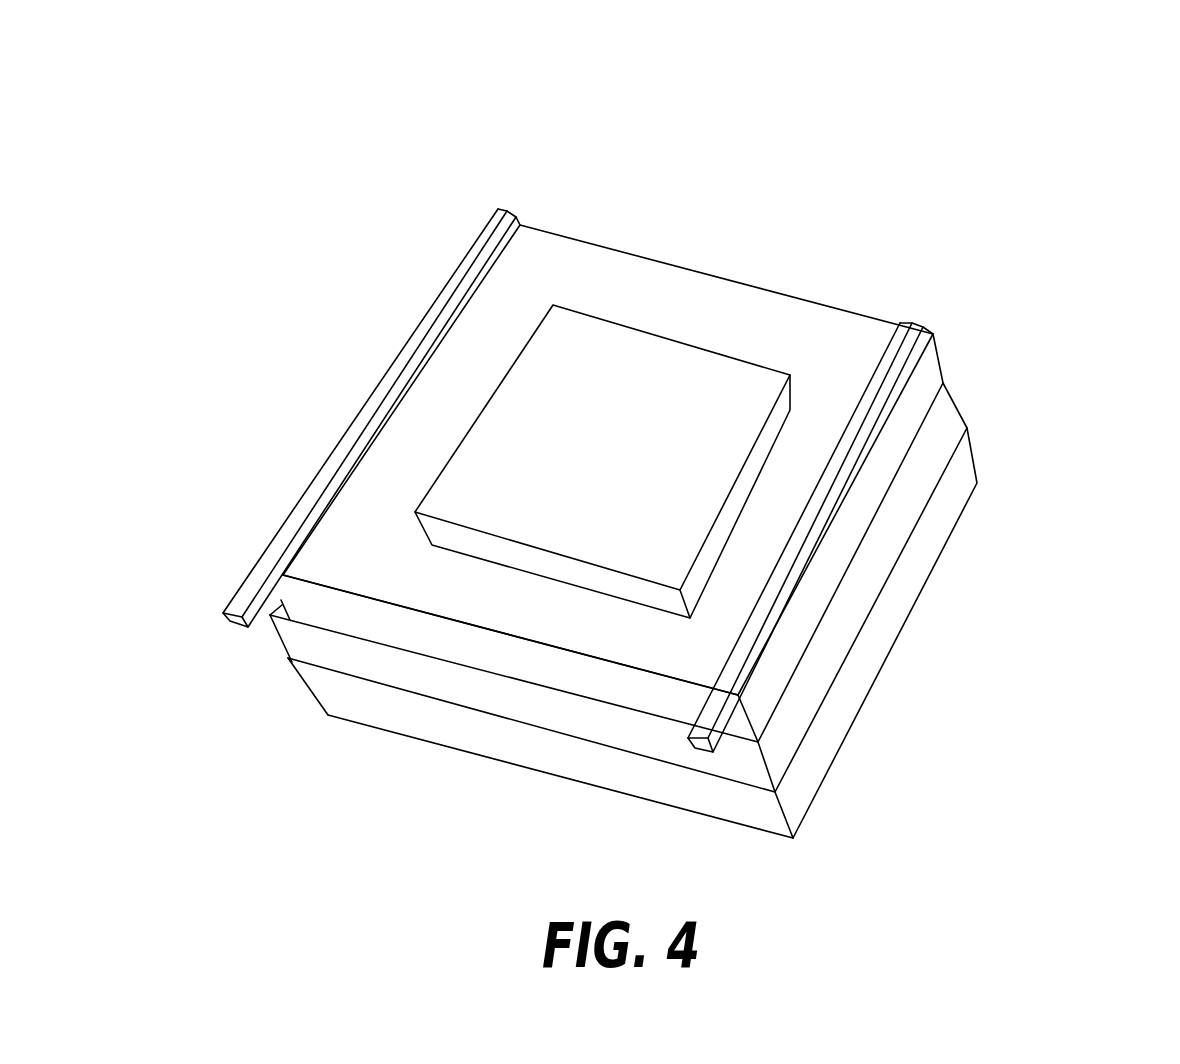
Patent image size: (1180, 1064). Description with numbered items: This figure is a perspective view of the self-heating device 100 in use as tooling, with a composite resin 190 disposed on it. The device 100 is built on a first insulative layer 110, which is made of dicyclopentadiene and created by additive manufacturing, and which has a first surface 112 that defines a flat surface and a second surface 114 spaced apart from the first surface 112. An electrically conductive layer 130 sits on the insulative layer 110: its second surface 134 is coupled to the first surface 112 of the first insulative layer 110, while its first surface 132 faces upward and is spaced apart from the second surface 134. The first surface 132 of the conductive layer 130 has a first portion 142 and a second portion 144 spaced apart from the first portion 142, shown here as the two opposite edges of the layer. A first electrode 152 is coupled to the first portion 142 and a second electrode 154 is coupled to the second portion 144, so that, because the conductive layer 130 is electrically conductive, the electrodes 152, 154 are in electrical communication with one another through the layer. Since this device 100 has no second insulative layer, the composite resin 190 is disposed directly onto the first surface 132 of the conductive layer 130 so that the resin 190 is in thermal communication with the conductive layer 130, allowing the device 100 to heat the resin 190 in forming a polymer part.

The self-heating device 100 is at (1079, 139).
The first insulative layer 110 is at (916, 582).
The first surface 112 is at (925, 427).
The second surface 114 is at (958, 520).
The electrically conductive layer 130 is at (723, 290).
The first surface 132 is at (827, 328).
The second surface 134 is at (950, 375).
The first portion 142 is at (529, 243).
The second portion 144 is at (873, 336).
The first electrode 152 is at (282, 536).
The second electrode 154 is at (763, 634).
The composite resin 190 is at (620, 310).